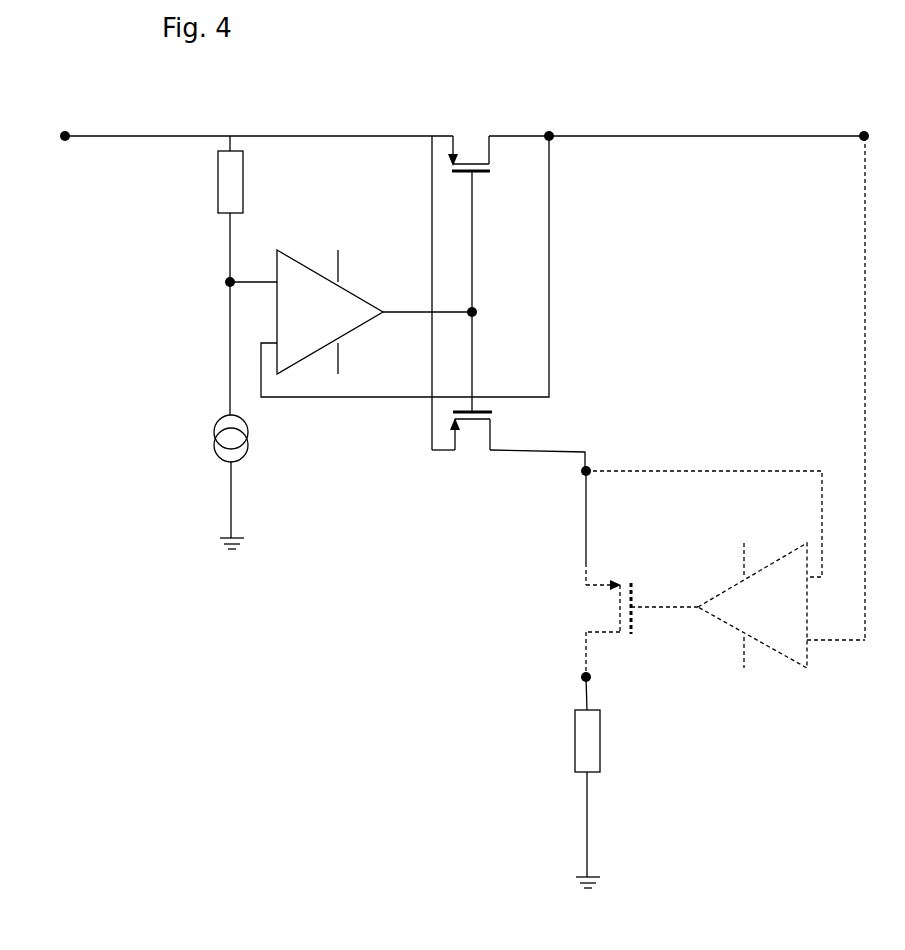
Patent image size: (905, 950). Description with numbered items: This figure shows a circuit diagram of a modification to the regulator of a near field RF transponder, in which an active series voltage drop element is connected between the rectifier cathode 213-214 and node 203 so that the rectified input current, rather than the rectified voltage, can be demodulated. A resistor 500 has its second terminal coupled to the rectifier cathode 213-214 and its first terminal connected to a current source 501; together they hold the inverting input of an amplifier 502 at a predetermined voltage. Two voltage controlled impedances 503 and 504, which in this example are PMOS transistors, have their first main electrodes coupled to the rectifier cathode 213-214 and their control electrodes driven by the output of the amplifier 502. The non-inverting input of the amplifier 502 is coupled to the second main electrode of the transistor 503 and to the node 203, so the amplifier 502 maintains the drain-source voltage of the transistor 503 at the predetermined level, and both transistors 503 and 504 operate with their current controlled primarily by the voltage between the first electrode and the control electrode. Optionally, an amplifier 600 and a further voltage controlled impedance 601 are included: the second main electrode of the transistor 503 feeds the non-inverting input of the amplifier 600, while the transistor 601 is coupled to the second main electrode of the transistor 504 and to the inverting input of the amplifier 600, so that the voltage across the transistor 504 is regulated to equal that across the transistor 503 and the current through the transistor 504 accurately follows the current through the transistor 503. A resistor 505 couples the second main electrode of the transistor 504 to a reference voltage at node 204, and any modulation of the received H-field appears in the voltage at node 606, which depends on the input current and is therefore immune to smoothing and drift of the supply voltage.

The rectifier cathode 213-214 is at (286, 122).
The node 203 is at (716, 374).
The node 204 is at (612, 881).
The resistor 500 is at (210, 209).
The current source 501 is at (213, 415).
The amplifier 502 is at (389, 264).
The voltage controlled impedance 503 is at (469, 211).
The voltage controlled impedance 504 is at (508, 305).
The resistor 505 is at (612, 793).
The amplifier 600 is at (725, 569).
The voltage controlled impedance 601 is at (625, 571).
The node 606 is at (610, 691).